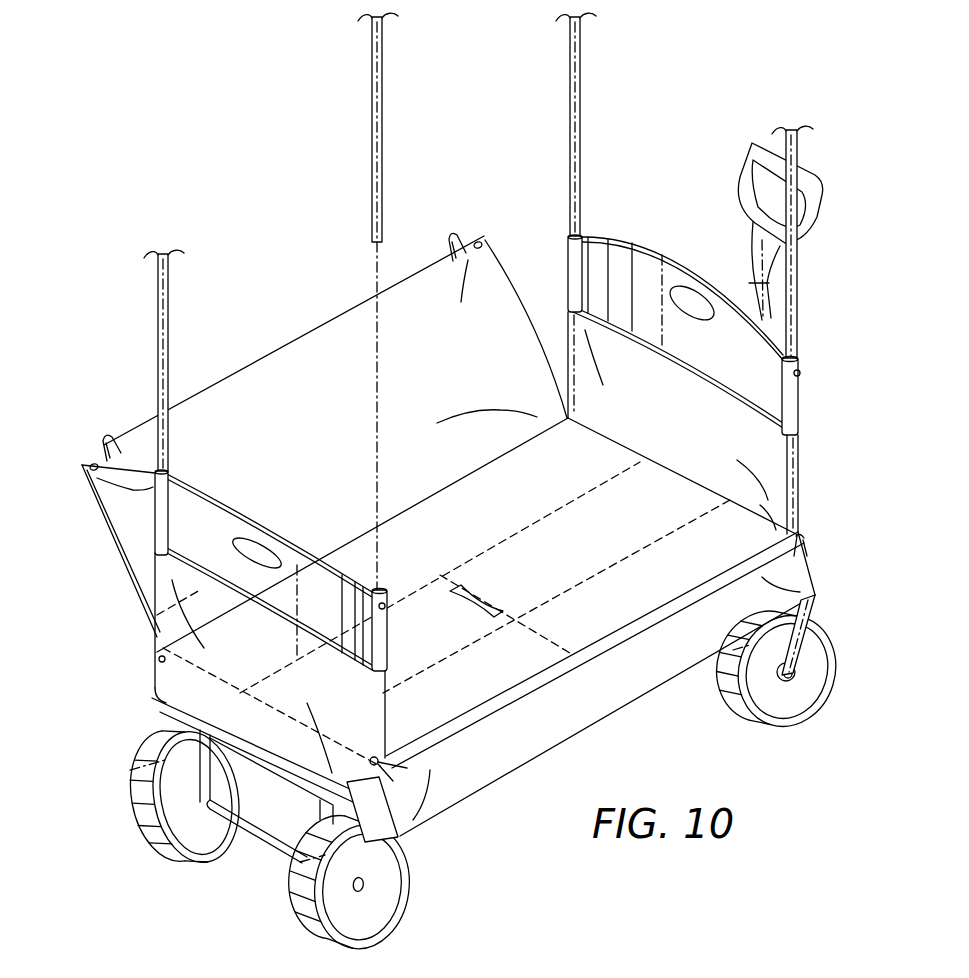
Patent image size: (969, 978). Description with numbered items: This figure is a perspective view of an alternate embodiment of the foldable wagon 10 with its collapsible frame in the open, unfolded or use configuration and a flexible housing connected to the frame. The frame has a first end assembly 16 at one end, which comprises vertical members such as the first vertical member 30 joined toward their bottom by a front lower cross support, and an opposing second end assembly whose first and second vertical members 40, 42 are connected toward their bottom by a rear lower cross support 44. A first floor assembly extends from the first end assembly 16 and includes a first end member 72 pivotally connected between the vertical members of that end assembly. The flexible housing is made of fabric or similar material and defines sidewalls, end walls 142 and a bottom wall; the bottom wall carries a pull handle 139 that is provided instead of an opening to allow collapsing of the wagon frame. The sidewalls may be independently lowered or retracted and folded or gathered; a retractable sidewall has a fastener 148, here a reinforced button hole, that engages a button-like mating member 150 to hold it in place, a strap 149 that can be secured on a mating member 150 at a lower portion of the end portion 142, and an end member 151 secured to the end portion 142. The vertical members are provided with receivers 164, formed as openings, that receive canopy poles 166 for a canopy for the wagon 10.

The foldable wagon 10 is at (684, 164).
The first end assembly 16 is at (686, 263).
The first vertical member 30 is at (566, 283).
The first vertical member 40 is at (156, 521).
The second vertical member 42 is at (384, 672).
The rear lower cross support 44 is at (178, 711).
The first end member 72 is at (794, 452).
The pull handle 139 is at (478, 598).
The end wall 142 is at (738, 462).
The fastener 148 is at (482, 244).
The strap 149 is at (449, 231).
The mating member 150 is at (158, 659).
The end member 151 is at (378, 824).
The receiver 164 is at (167, 470).
The canopy pole 166 is at (372, 120).